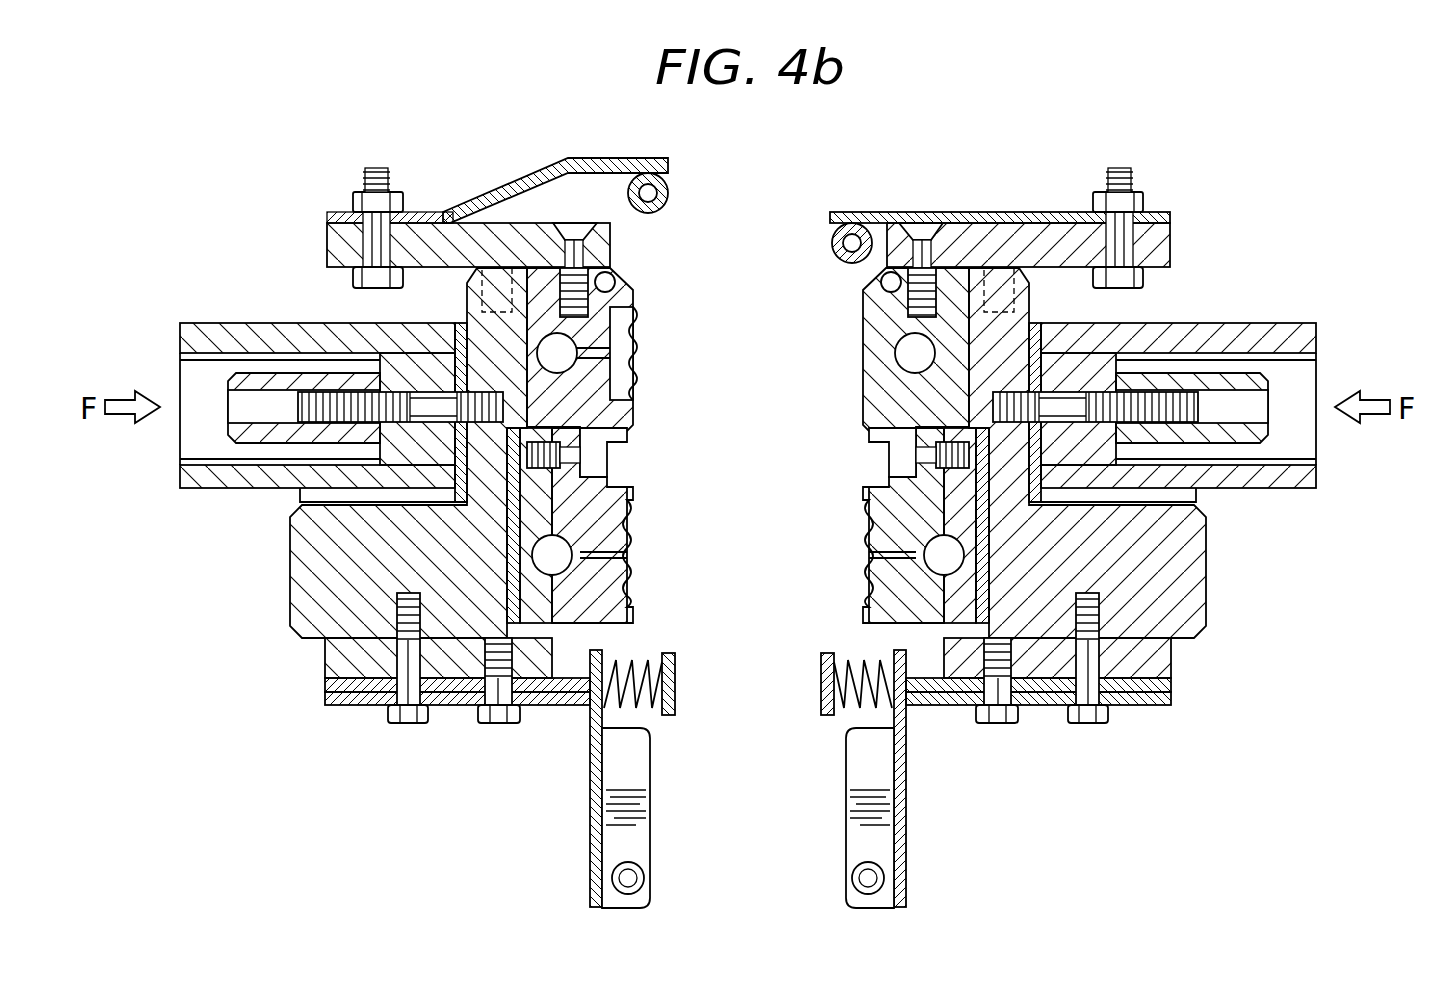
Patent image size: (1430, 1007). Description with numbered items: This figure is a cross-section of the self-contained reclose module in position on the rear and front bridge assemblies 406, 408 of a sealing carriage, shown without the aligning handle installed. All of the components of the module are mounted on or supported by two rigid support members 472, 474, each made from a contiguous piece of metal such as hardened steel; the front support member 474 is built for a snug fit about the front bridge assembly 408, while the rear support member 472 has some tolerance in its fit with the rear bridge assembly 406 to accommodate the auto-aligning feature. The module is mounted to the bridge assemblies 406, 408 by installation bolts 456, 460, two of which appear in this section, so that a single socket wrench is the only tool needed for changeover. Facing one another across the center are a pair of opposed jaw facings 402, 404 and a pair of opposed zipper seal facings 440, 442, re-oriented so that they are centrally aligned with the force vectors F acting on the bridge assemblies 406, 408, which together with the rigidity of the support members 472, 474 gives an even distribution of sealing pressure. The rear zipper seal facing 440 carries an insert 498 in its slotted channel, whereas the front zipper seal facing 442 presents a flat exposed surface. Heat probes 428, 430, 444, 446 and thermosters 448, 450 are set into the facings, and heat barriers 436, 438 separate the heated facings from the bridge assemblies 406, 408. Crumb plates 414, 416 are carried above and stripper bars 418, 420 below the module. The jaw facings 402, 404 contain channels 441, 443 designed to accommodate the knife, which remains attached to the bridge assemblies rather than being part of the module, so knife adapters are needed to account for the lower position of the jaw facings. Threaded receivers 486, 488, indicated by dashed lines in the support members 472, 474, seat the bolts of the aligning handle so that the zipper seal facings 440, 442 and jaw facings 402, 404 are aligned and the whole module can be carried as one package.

The jaw facing 402 is at (607, 618).
The jaw facing 404 is at (890, 618).
The bridge assembly 406 is at (240, 323).
The bridge assembly 408 is at (1250, 320).
The crumb plate 414 is at (612, 152).
The crumb plate 416 is at (870, 212).
The stripper bar 418 is at (674, 708).
The stripper bar 420 is at (826, 670).
The heat probe 428 is at (562, 362).
The heat probe 430 is at (905, 362).
The heat barrier 436 is at (467, 322).
The heat barrier 438 is at (1045, 365).
The zipper seal facing 440 is at (636, 297).
The channel 441 is at (635, 557).
The zipper seal facing 442 is at (864, 332).
The channel 443 is at (868, 555).
The heat probe 444 is at (566, 548).
The heat probe 446 is at (935, 560).
The thermoster 448 is at (613, 277).
The thermoster 450 is at (881, 285).
The installation bolt 456 is at (292, 403).
The installation bolt 460 is at (1205, 403).
The support member 472 is at (290, 560).
The support member 474 is at (1210, 575).
The threaded receiver 486 is at (503, 268).
The threaded receiver 488 is at (993, 268).
The insert 498 is at (640, 340).